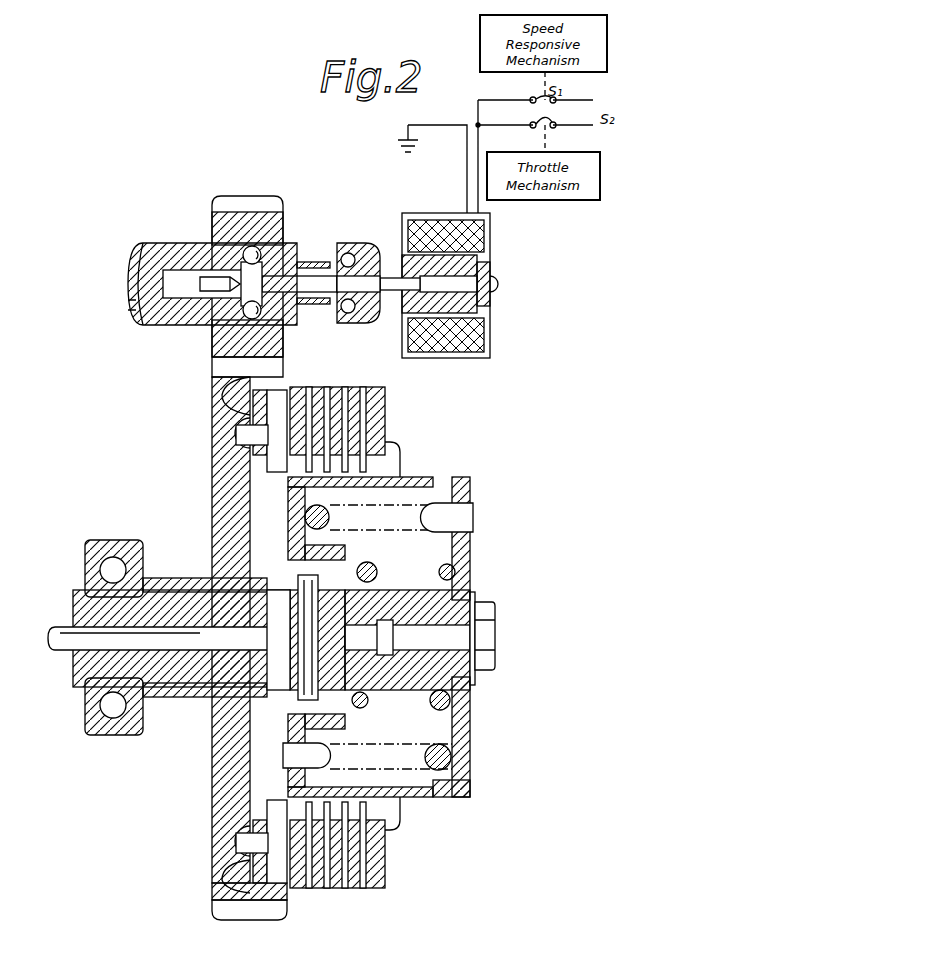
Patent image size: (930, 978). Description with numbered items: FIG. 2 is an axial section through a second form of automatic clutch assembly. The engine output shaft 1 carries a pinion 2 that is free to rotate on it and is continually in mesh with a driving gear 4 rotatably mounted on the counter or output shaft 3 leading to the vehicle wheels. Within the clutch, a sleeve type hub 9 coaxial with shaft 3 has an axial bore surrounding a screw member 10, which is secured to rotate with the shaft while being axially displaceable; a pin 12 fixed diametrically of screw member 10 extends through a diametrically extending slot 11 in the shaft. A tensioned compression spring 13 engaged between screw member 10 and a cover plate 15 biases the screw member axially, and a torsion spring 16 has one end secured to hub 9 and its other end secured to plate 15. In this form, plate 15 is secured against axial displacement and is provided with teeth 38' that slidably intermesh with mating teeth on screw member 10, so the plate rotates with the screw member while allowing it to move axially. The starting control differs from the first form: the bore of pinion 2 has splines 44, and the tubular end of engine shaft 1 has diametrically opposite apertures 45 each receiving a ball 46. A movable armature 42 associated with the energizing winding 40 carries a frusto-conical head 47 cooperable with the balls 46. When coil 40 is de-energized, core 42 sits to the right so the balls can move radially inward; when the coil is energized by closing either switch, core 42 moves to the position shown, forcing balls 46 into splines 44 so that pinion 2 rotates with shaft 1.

The output shaft 1 is at (155, 240).
The pinion 2 is at (262, 228).
The output shaft 3 is at (97, 617).
The driving gear 4 is at (243, 492).
The sleeve type hub 9 is at (300, 787).
The screw member 10 is at (290, 693).
The slot 11 is at (280, 612).
The pin 12 is at (300, 582).
The compression spring 13 is at (408, 572).
The cover plate 15 is at (460, 555).
The torsion spring 16 is at (392, 517).
The teeth 38' is at (437, 734).
The energizing winding 40 is at (473, 240).
The movable armature 42 is at (448, 305).
The splines 44 is at (230, 243).
The apertures 45 is at (237, 260).
The ball 46 is at (287, 213).
The frusto-conical head 47 is at (247, 290).